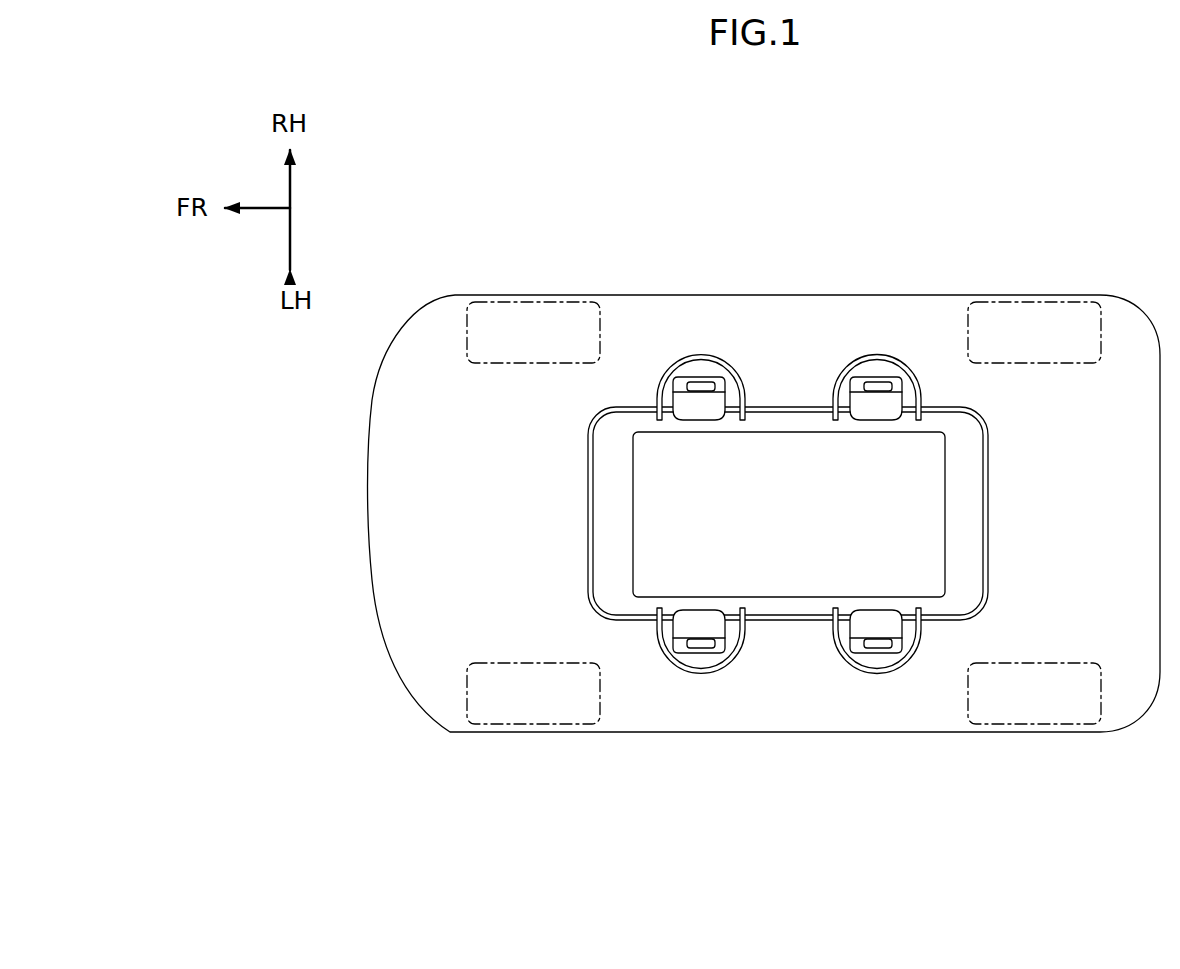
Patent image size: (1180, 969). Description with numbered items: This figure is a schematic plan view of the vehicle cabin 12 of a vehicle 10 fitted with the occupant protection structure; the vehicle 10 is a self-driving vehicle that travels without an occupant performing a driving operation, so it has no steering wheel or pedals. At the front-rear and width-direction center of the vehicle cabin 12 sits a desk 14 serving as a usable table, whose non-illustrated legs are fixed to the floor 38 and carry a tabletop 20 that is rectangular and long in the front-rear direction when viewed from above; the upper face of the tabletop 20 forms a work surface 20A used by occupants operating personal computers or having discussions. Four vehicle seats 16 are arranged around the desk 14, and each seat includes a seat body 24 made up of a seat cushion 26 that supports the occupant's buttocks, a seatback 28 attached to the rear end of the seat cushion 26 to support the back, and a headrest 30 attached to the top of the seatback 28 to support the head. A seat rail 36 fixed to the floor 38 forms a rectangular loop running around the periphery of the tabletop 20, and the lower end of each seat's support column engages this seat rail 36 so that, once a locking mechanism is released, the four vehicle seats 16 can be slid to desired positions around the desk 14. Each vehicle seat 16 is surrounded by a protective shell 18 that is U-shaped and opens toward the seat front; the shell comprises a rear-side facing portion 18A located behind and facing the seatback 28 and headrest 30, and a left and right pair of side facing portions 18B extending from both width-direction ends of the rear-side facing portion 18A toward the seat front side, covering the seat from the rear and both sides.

The vehicle 10 is at (762, 205).
The vehicle cabin 12 is at (458, 505).
The desk 14 is at (952, 538).
The vehicle seat 16 is at (701, 420).
The protective shell 18 is at (702, 355).
The rear-side facing portion 18A is at (887, 348).
The side facing portion 18B is at (832, 415).
The tabletop 20 is at (655, 518).
The work surface 20A is at (773, 565).
The seat body 24 is at (859, 417).
The seat cushion 26 is at (923, 415).
The seatback 28 is at (862, 377).
The headrest 30 is at (870, 357).
The seat rail 36 is at (647, 407).
The floor 38 is at (628, 668).